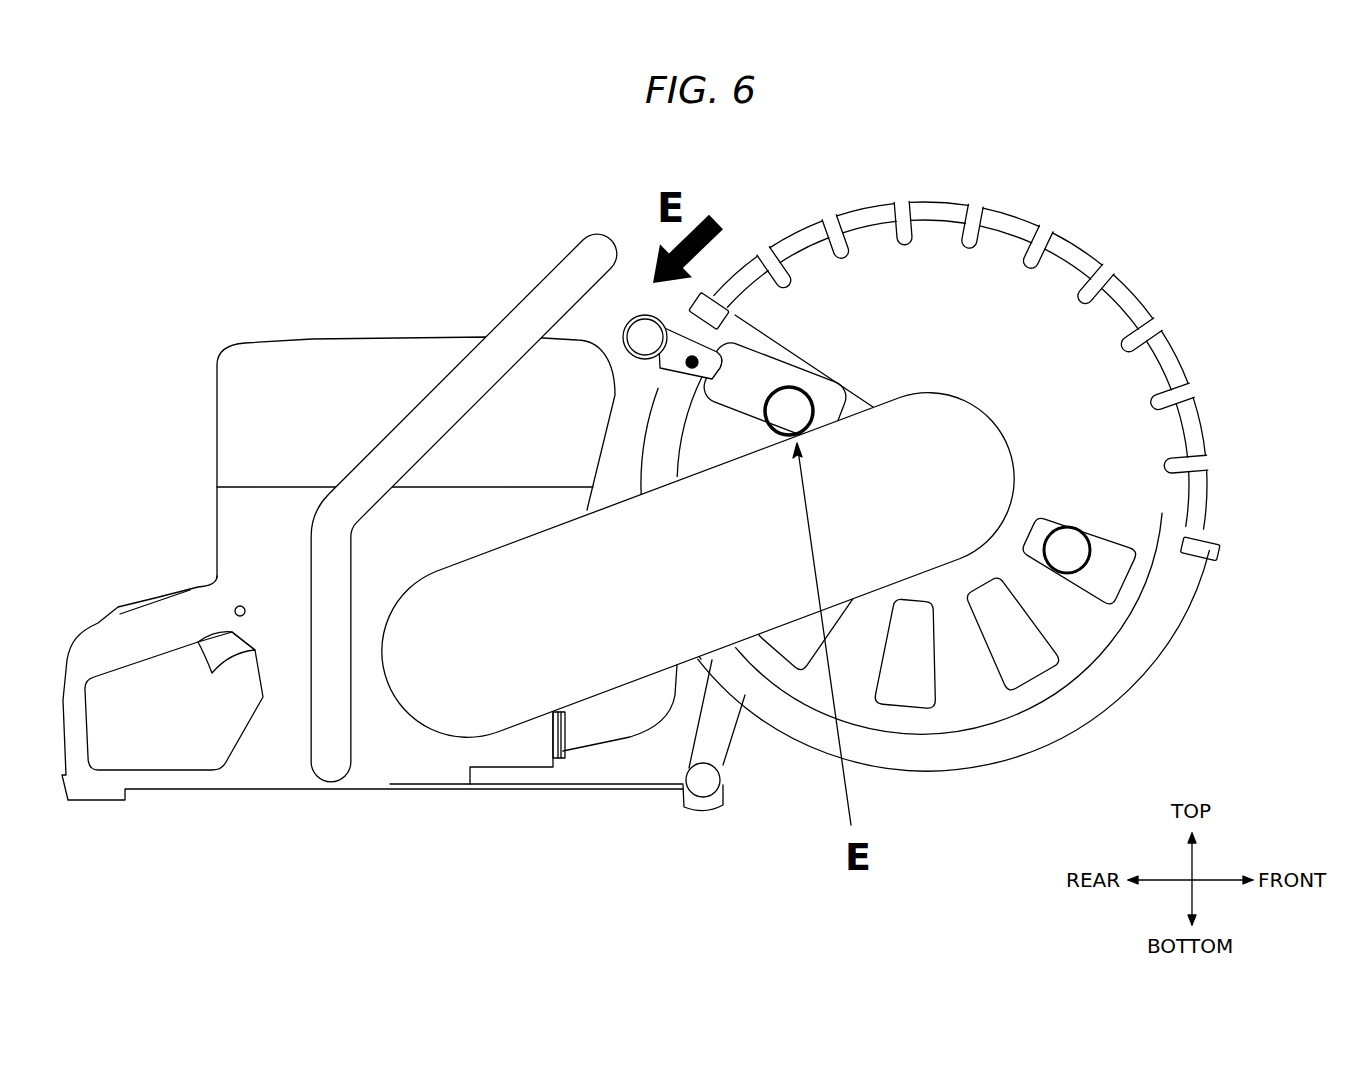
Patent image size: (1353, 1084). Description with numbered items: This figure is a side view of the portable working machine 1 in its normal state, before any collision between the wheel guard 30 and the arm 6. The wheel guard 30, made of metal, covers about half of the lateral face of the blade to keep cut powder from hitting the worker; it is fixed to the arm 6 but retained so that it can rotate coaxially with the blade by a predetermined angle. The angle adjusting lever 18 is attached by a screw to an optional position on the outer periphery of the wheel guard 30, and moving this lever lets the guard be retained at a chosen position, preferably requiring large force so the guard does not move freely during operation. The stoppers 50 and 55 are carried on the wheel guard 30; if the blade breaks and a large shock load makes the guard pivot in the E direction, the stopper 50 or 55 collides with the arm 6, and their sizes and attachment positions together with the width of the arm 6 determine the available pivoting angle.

The cutting machine 1 is at (191, 269).
The arm 6 is at (583, 650).
The angle adjusting lever 18 is at (628, 320).
The wheel guard 30 is at (986, 773).
The stopper 50 is at (788, 398).
The stopper 55 is at (1080, 560).